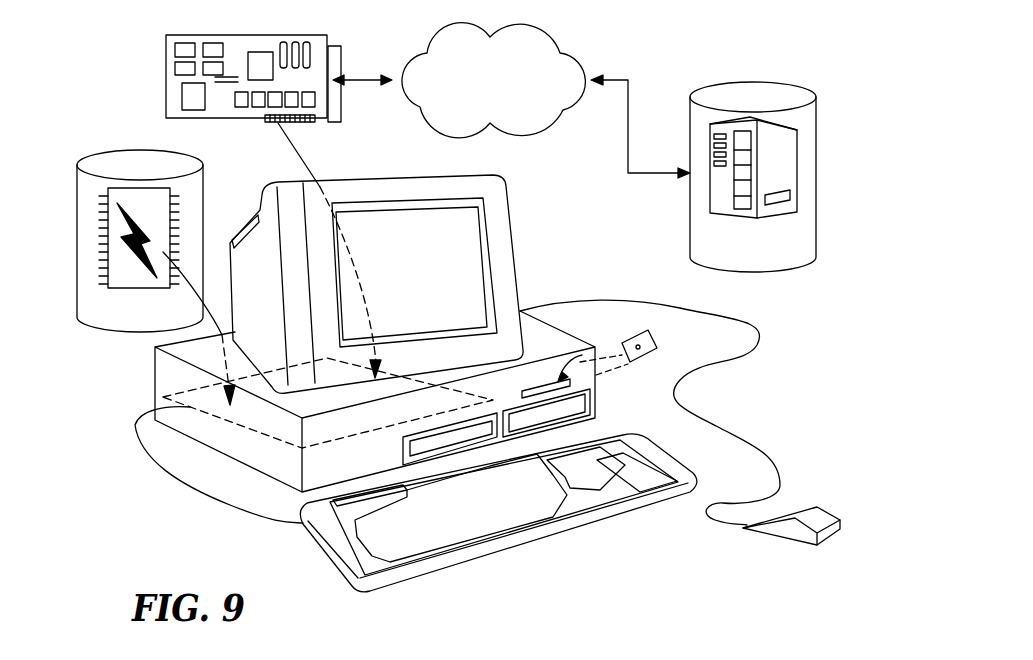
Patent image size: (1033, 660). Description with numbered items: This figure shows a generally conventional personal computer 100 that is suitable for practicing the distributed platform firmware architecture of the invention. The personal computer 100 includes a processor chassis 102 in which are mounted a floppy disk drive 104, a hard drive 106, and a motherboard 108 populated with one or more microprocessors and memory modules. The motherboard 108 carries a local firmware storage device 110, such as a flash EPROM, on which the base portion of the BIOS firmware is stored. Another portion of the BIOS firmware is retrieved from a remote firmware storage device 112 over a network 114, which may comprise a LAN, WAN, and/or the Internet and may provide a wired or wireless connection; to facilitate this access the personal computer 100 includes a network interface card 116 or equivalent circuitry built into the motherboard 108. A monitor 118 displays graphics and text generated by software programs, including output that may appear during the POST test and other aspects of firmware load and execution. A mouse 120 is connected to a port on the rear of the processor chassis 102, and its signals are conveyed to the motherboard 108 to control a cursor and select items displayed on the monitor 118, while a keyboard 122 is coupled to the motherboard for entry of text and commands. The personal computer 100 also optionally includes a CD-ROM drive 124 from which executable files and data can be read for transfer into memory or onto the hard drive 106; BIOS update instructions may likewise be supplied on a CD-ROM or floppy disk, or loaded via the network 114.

The personal computer 100 is at (458, 406).
The processor chassis 102 is at (592, 378).
The floppy disk drive 104 is at (582, 370).
The hard drive 106 is at (568, 408).
The motherboard 108 is at (155, 398).
The local firmware storage device 110 is at (117, 277).
The remote firmware storage device 112 is at (768, 256).
The network 114 is at (527, 122).
The network interface card 116 is at (323, 108).
The monitor 118 is at (512, 237).
The mouse 120 is at (780, 530).
The keyboard 122 is at (588, 531).
The CD-ROM drive 124 is at (403, 450).